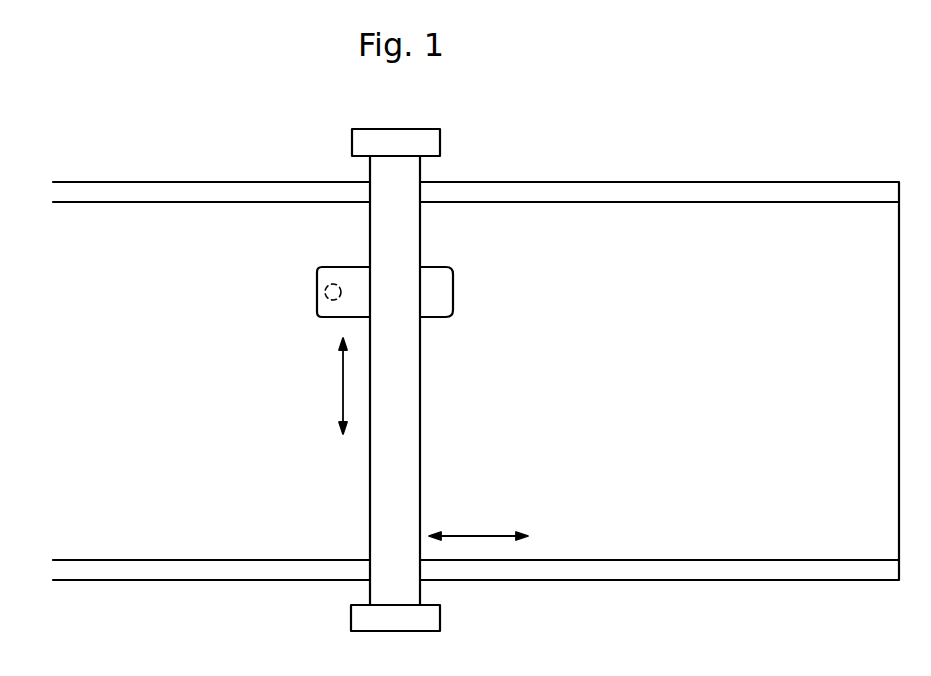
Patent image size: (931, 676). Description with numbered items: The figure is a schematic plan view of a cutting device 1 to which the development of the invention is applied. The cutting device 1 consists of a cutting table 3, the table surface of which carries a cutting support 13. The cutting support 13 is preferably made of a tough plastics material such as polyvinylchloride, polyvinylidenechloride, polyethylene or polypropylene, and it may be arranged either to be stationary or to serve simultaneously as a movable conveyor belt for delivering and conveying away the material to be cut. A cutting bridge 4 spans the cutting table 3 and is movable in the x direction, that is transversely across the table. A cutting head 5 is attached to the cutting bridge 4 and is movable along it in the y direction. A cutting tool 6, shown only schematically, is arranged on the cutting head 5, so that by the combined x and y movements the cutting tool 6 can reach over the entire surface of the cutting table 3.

The cutting device 1 is at (527, 110).
The cutting table 3 is at (578, 197).
The cutting bridge 4 is at (412, 392).
The cutting head 5 is at (334, 270).
The cutting tool 6 is at (325, 293).
The cutting support 13 is at (640, 355).